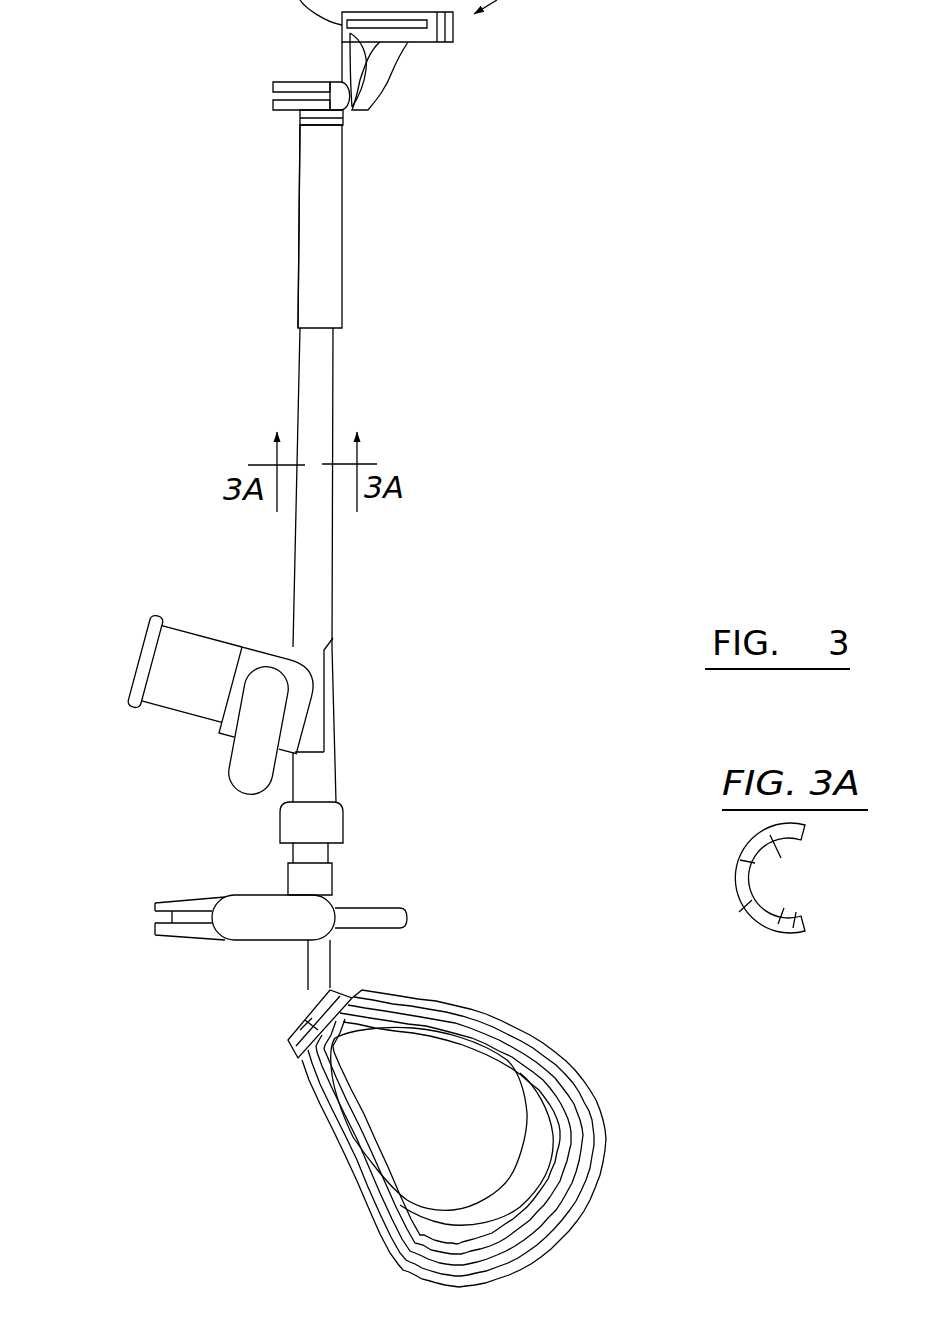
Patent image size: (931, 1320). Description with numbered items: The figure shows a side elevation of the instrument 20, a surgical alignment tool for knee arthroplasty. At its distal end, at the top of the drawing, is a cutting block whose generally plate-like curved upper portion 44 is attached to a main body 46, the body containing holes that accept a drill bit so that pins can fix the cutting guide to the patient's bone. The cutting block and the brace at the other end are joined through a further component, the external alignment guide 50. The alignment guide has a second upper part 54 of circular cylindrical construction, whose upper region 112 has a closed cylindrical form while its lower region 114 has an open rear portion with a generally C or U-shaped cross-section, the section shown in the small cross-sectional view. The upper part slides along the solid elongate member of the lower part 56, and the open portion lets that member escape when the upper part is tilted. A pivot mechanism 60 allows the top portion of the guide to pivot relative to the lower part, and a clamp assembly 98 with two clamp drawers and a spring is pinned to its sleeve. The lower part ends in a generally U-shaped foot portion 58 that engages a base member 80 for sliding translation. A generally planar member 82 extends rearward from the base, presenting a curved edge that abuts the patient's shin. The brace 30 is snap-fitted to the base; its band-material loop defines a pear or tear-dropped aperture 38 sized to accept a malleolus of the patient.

The instrument 20 is at (643, 291).
The brace 30 is at (638, 1113).
The tear-dropped aperture 38 is at (433, 1114).
The curved upper portion 44 is at (453, 28).
The main body 46 is at (383, 72).
The external alignment guide 50 is at (364, 526).
The second upper part of the alignment guide 54 is at (298, 298).
The lower part of the alignment guide 56 is at (317, 855).
The foot portion 58 is at (354, 811).
The pivot mechanism 60 is at (134, 641).
The base member 80 is at (243, 953).
The planar member 82 is at (393, 920).
The clamp assembly 98 is at (211, 756).
The upper region 112 is at (342, 228).
The lower region 114 is at (315, 415).